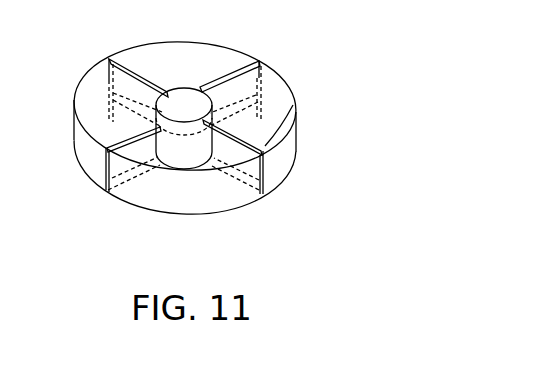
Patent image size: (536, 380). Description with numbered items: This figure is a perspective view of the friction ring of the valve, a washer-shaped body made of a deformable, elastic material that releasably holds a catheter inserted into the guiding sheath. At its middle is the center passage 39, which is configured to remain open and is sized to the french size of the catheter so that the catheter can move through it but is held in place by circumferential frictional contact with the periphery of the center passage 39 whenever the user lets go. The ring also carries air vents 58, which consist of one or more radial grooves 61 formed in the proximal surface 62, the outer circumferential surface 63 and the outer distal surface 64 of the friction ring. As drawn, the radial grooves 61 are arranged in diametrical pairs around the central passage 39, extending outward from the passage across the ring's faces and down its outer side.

The center passage 39 is at (190, 100).
The air vents 58 is at (222, 195).
The radial grooves 61 is at (228, 193).
The proximal surface 62 is at (93, 90).
The outer circumferential surface 63 is at (93, 158).
The outer distal surface 64 is at (121, 203).